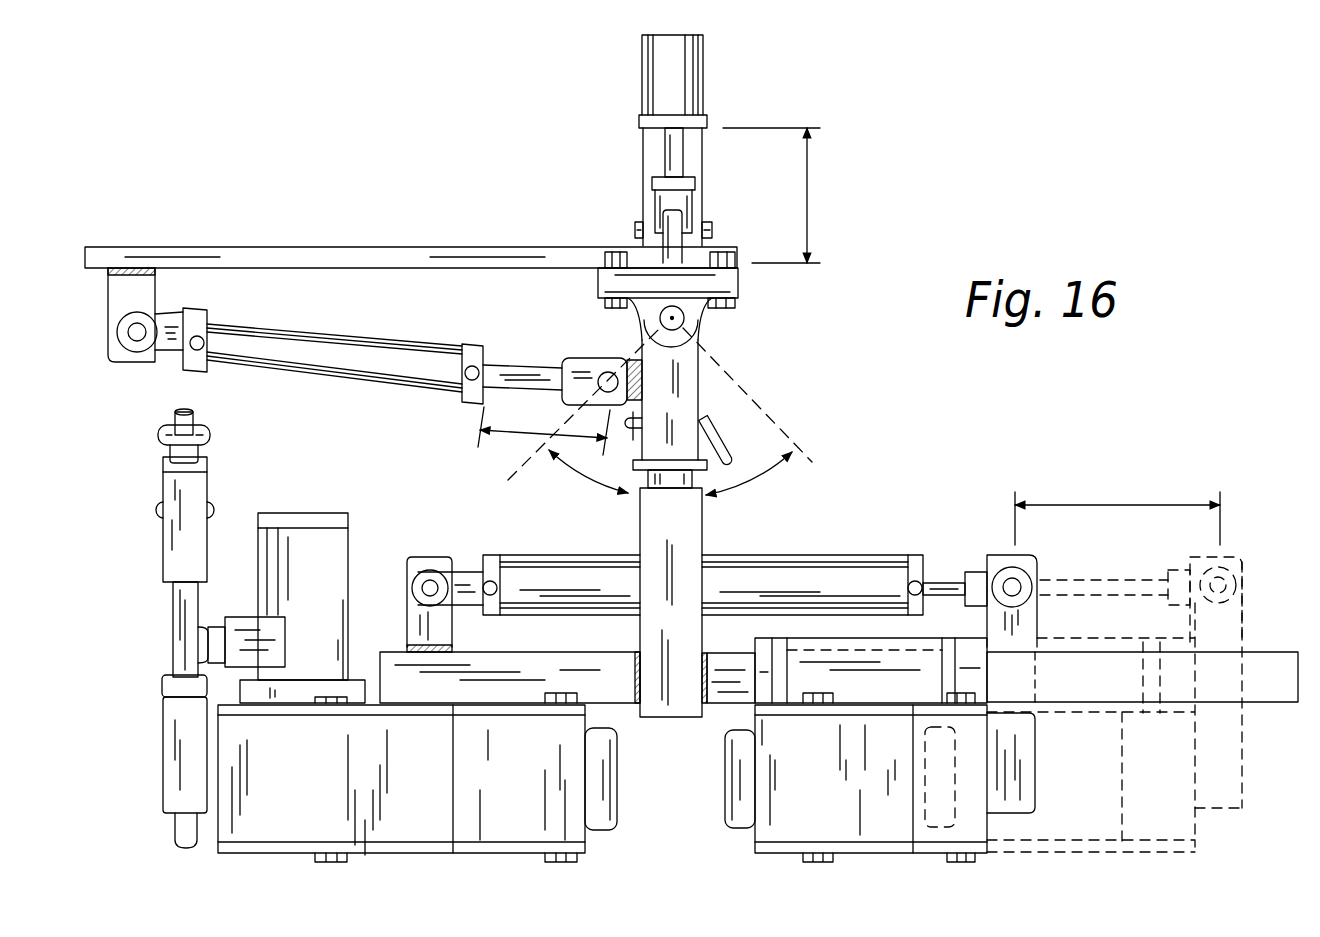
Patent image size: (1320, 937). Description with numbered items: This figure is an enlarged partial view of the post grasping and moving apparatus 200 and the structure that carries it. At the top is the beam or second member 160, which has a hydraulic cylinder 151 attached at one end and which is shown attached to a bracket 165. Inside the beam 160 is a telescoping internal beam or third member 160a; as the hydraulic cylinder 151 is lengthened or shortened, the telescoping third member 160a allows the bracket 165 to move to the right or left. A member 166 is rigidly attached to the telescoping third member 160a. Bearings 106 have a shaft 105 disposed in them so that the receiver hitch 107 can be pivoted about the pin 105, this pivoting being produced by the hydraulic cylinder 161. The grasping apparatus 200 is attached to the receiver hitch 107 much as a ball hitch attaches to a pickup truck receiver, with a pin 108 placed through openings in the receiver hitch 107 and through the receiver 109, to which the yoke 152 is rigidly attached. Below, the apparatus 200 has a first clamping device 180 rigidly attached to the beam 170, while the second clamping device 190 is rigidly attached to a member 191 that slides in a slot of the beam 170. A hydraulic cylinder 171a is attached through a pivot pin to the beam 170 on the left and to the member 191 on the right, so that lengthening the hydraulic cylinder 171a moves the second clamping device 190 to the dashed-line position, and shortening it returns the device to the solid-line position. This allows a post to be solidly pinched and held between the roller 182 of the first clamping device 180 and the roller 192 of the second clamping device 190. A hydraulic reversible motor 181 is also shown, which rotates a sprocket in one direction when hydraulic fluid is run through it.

The beam or second member 160 is at (703, 74).
The hydraulic cylinder 151 is at (665, 102).
The telescoping internal beam or third member 160a is at (688, 257).
The bracket 165 is at (343, 253).
The hydraulic cylinder 161 is at (318, 346).
The bearings 106 is at (733, 290).
The member 166 is at (598, 277).
The shaft or pin 105 is at (674, 318).
The receiver hitch 107 is at (692, 373).
The pin 108 is at (718, 432).
The receiver 109 is at (735, 486).
The yoke 152 is at (645, 533).
The hydraulic reversible motor 181 is at (336, 566).
The first clamping device 180 is at (490, 843).
The roller 182 is at (612, 818).
The post or beam 170 is at (517, 657).
The hydraulic cylinder 171a is at (816, 573).
The member 191 is at (1038, 612).
The second clamping device 190 is at (800, 830).
The roller 192 is at (730, 817).
The post grasping and moving apparatus 200 is at (1170, 466).